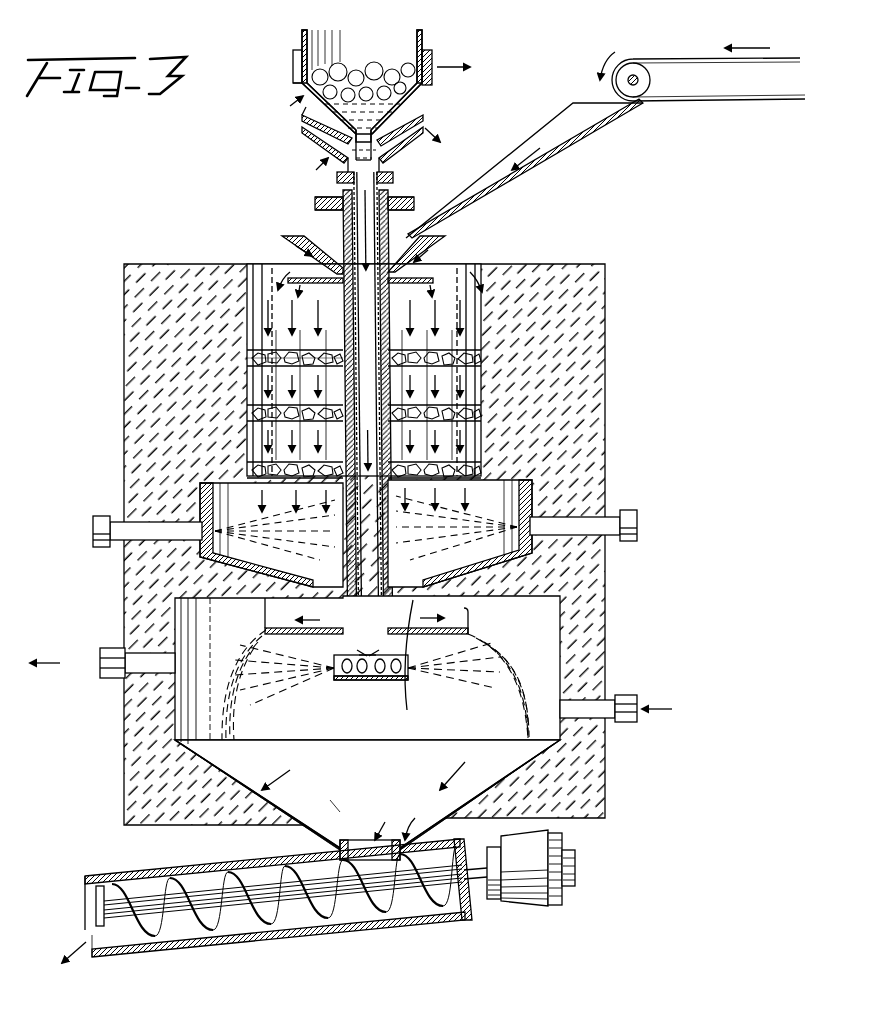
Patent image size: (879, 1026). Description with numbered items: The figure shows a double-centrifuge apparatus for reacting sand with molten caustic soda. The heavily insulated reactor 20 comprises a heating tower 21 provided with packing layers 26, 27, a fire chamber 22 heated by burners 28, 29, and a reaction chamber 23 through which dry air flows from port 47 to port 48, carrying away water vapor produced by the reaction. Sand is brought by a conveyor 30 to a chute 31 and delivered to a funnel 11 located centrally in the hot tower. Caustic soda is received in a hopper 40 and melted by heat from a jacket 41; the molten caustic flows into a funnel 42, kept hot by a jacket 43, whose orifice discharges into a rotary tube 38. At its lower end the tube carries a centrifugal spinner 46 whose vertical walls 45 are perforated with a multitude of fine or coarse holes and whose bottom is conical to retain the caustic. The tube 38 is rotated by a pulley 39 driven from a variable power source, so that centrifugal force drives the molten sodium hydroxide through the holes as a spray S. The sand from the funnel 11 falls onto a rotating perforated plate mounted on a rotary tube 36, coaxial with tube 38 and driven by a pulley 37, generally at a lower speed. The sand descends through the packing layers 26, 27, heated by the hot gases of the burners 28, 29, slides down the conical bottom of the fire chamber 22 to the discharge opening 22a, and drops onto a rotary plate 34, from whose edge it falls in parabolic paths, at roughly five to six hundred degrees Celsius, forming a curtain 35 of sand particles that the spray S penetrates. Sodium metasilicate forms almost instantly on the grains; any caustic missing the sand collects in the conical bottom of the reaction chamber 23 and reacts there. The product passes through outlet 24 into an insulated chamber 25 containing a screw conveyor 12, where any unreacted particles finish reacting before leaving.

The funnel 11 is at (436, 246).
The screw conveyor 12 is at (316, 915).
The reactor 20 is at (598, 288).
The heating tower 21 is at (470, 284).
The fire chamber 22 is at (535, 500).
The discharge opening 22a is at (413, 690).
The reaction chamber 23 is at (542, 633).
The outlet 24 is at (338, 848).
The insulated chamber 25 is at (363, 924).
The packing layer 26 is at (402, 364).
The packing layer 27 is at (300, 350).
The burner 28 is at (630, 510).
The burner 29 is at (96, 520).
The conveyor 30 is at (714, 97).
The chute 31 is at (564, 148).
The plate 34 is at (300, 631).
The curtain 35 is at (240, 688).
The rotary tube 36 is at (343, 227).
The pulley 37 is at (328, 199).
The rotary tube 38 is at (388, 226).
The pulley 39 is at (393, 177).
The hopper 40 is at (388, 42).
The jacket 41 is at (434, 72).
The funnel 42 is at (308, 120).
The jacket 43 is at (310, 142).
The vertical walls 45 is at (333, 670).
The centrifugal spinner 46 is at (354, 682).
The port 47 is at (630, 700).
The port 48 is at (105, 653).
The spray S is at (456, 682).